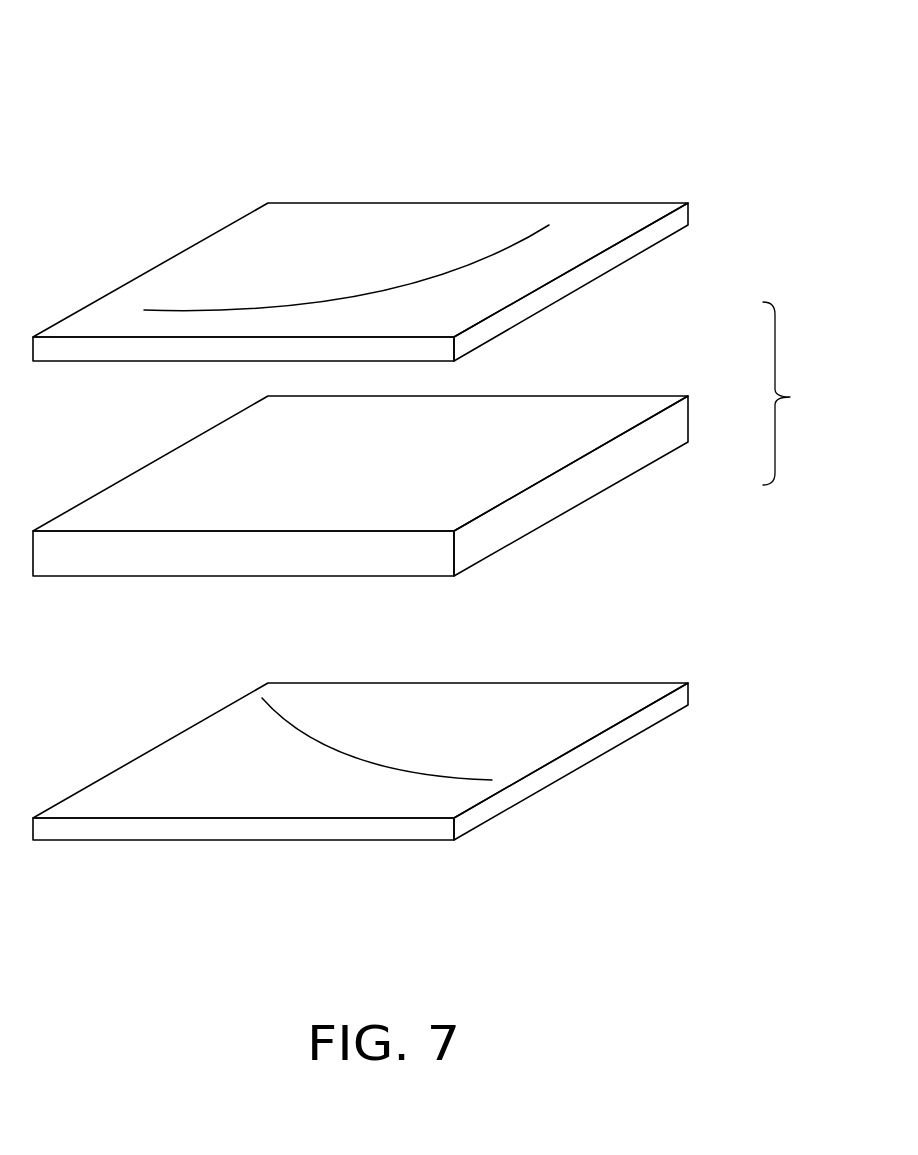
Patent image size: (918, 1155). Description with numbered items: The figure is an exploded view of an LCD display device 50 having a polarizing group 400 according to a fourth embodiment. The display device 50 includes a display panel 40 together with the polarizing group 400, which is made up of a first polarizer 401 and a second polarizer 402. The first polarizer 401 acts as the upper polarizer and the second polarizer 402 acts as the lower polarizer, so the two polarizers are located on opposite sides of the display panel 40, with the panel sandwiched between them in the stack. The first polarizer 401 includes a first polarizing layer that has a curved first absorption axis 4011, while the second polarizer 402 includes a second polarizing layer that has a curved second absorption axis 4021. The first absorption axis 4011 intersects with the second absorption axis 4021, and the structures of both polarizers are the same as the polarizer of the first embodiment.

The display device 50 is at (152, 33).
The polarizing group 400 is at (802, 393).
The first polarizer 401 is at (632, 249).
The first absorption axis 4011 is at (405, 282).
The display panel 40 is at (500, 415).
The second polarizer 402 is at (602, 695).
The second absorption axis 4021 is at (345, 757).